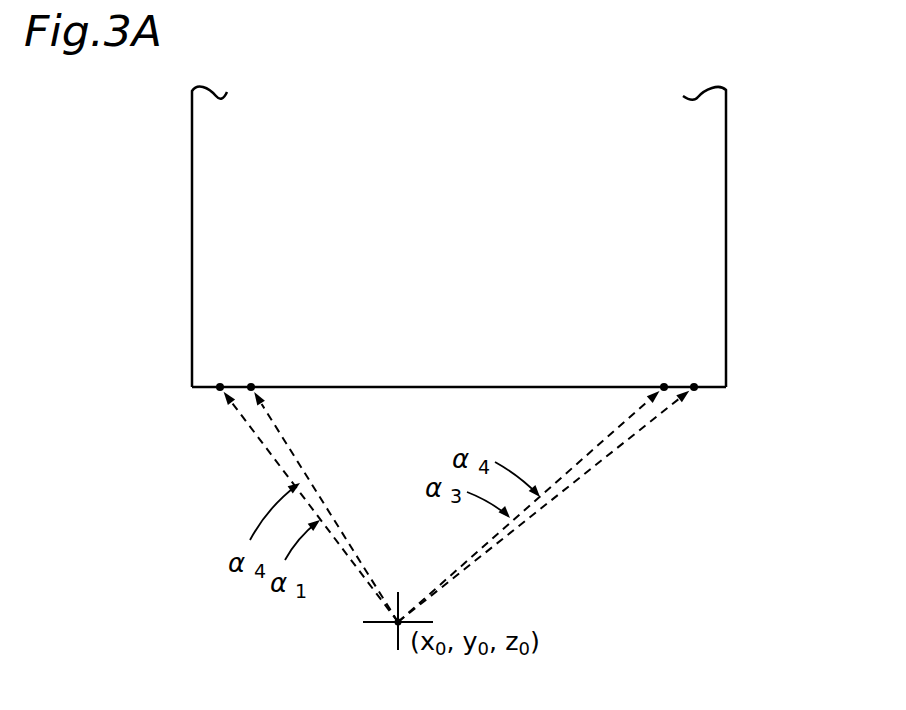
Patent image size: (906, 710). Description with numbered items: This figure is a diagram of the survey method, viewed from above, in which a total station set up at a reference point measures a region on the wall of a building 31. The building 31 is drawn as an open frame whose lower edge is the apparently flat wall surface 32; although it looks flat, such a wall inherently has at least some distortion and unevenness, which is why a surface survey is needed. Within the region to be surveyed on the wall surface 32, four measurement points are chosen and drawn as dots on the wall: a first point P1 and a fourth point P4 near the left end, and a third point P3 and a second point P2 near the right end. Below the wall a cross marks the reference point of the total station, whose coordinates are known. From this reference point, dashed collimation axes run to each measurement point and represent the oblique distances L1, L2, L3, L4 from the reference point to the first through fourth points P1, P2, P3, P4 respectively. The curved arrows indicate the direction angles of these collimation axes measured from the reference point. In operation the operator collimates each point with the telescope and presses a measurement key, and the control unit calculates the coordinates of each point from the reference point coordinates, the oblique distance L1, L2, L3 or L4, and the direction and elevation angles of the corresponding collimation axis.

The building 31 is at (726, 248).
The wall surface 32 is at (457, 387).
The first measurement point P1 is at (211, 372).
The second measurement point P2 is at (697, 372).
The third measurement point P3 is at (655, 372).
The fourth measurement point P4 is at (252, 372).
The oblique distance to the first point L1 is at (268, 450).
The oblique distance to the second point L2 is at (595, 466).
The oblique distance to the third point L3 is at (578, 462).
The oblique distance to the fourth point L4 is at (288, 447).